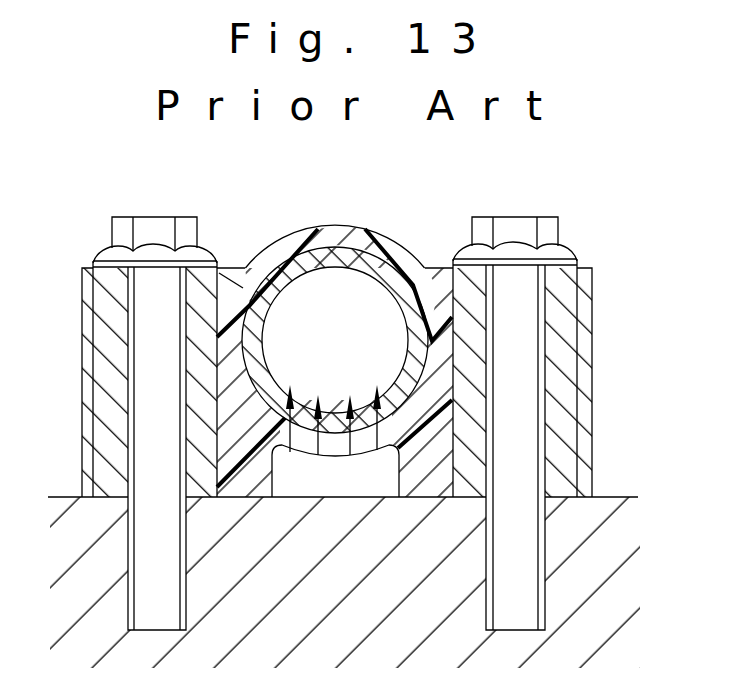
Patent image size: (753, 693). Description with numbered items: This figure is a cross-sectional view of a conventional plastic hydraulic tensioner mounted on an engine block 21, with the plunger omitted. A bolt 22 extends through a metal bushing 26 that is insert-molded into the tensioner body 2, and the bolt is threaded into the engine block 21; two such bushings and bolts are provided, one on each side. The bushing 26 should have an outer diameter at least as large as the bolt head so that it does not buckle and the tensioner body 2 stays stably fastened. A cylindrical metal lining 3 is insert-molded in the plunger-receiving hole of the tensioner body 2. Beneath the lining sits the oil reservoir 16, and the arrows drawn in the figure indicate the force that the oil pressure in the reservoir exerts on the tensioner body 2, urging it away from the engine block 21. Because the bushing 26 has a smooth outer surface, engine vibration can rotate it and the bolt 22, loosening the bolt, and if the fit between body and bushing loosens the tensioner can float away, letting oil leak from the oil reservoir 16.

The tensioner body 2 is at (433, 287).
The cylindrical metal lining 3 is at (325, 255).
The oil reservoir 16 is at (333, 477).
The engine block 21 is at (613, 542).
The bolt 22 is at (525, 216).
The metal bushing 26 is at (563, 389).